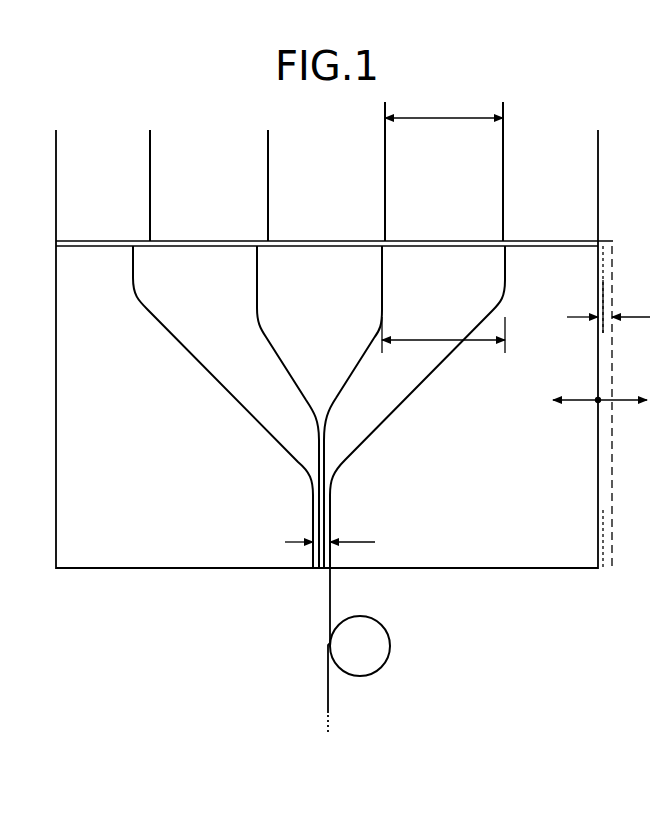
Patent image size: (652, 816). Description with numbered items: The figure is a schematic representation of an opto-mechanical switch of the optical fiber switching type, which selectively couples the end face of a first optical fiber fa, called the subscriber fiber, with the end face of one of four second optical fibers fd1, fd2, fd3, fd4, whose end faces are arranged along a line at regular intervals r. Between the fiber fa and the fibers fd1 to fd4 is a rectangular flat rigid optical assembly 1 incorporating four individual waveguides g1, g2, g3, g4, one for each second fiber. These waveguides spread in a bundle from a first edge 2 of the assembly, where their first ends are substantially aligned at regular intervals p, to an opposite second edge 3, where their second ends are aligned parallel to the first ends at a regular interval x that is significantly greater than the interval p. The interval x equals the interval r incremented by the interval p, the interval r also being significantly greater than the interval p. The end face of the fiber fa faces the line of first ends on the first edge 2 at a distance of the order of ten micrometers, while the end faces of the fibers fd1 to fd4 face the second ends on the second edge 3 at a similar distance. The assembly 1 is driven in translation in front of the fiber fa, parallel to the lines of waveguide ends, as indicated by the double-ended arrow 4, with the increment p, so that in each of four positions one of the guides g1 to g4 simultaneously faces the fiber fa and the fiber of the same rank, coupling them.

The optical assembly 1 is at (115, 450).
The first edge 2 is at (158, 568).
The second edge 3 is at (78, 241).
The double-ended arrow 4 is at (606, 400).
The second optical fiber fd1 is at (503, 196).
The second optical fiber fd2 is at (385, 196).
The second optical fiber fd3 is at (268, 166).
The second optical fiber fd4 is at (150, 166).
The waveguide g1 is at (505, 283).
The waveguide g2 is at (382, 296).
The waveguide g3 is at (257, 293).
The waveguide g4 is at (133, 283).
The optical fiber fa is at (327, 697).
The interval p is at (467, 411).
The interval r is at (444, 105).
The interval x is at (443, 334).